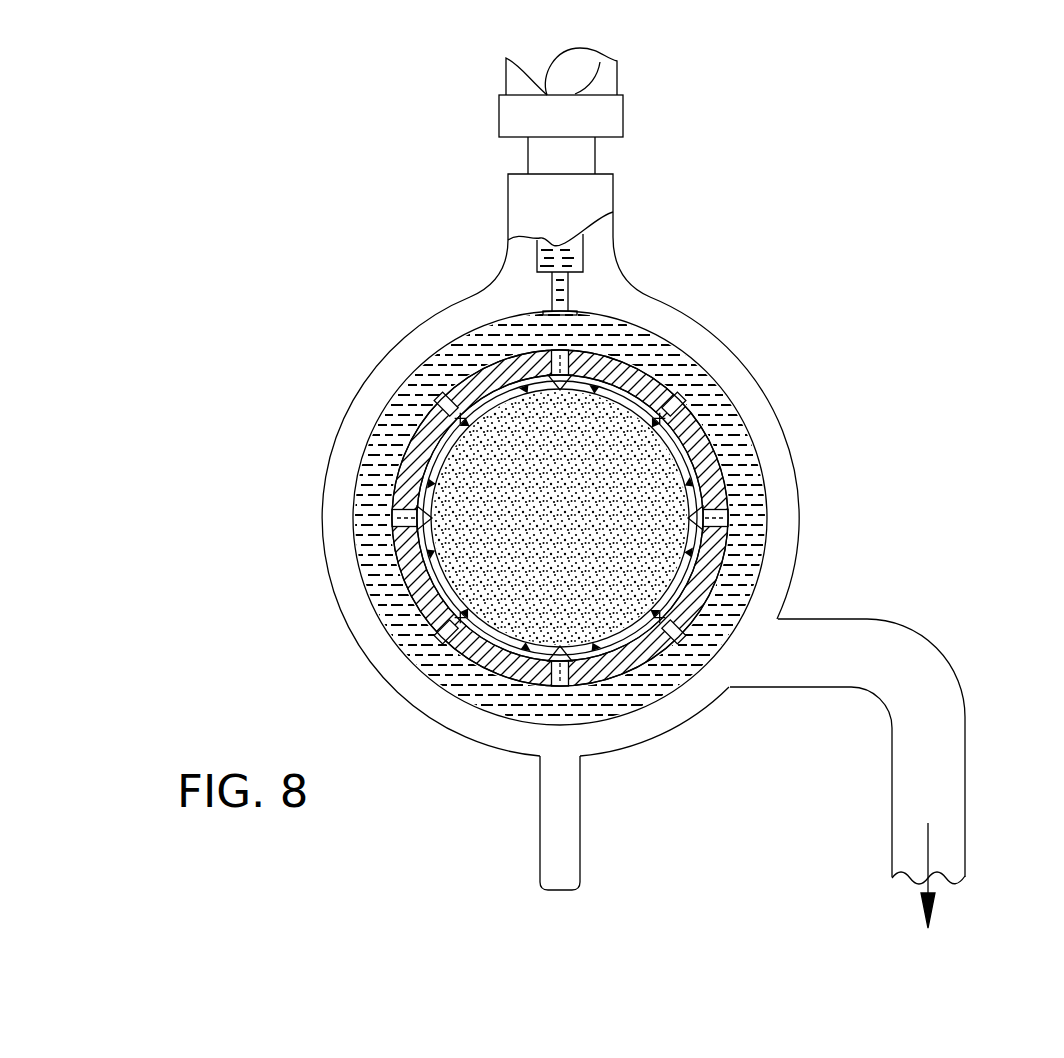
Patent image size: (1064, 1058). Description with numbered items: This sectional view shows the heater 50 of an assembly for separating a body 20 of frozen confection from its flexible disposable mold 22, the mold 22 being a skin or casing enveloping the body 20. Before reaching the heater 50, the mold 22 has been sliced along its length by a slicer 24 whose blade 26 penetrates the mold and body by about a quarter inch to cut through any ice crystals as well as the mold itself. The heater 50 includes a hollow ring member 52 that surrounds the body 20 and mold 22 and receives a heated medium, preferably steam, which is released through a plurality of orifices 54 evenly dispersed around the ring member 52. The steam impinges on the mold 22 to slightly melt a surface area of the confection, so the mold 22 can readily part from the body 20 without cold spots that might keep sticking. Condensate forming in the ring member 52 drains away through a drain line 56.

The body of frozen confection 20 is at (627, 562).
The flexible disposable mold 22 is at (693, 476).
The slicer 24 is at (628, 365).
The blade 26 is at (628, 365).
The heater 50 is at (513, 197).
The hollow ring member 52 is at (337, 478).
The orifices 54 is at (413, 662).
The drain line 56 is at (943, 768).